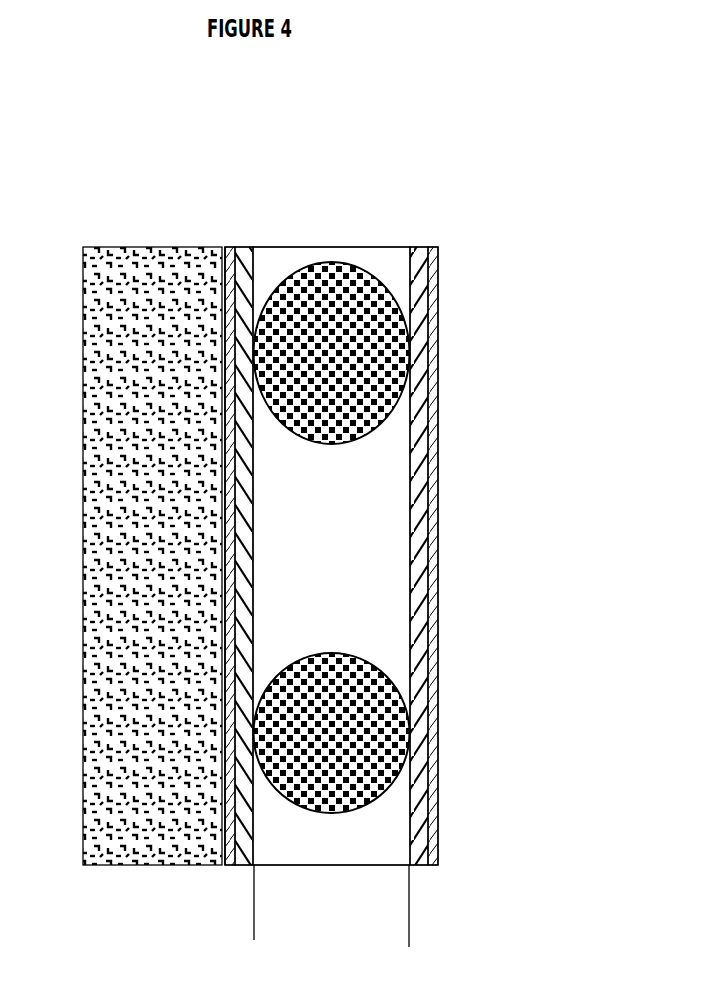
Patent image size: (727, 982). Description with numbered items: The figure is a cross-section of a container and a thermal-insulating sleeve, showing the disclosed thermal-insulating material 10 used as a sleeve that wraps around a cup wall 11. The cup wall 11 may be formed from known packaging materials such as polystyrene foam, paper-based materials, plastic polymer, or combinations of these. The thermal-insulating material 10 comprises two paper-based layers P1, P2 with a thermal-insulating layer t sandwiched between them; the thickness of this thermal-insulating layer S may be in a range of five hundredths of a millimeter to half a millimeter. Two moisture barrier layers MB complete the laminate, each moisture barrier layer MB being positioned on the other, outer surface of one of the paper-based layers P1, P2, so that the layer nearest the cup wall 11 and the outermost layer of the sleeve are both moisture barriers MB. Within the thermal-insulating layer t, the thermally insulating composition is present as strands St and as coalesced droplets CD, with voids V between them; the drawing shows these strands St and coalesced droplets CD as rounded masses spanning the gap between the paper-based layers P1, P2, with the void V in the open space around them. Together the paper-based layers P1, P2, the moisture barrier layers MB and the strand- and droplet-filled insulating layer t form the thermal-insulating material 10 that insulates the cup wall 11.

The cup wall 11 is at (218, 190).
The thermal-insulating material 10 is at (438, 197).
The moisture barrier layer MB is at (223, 833).
The paper-based layer P1 is at (442, 467).
The paper-based layer P2 is at (268, 663).
The thermal-insulating layer S is at (410, 247).
The coalesced droplets CD is at (274, 412).
The strands St is at (383, 672).
The voids V is at (373, 562).
The thermal-insulating layer t is at (395, 917).